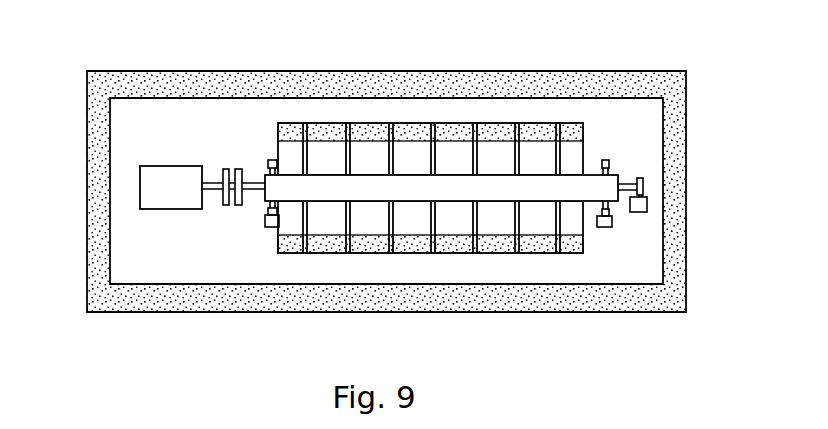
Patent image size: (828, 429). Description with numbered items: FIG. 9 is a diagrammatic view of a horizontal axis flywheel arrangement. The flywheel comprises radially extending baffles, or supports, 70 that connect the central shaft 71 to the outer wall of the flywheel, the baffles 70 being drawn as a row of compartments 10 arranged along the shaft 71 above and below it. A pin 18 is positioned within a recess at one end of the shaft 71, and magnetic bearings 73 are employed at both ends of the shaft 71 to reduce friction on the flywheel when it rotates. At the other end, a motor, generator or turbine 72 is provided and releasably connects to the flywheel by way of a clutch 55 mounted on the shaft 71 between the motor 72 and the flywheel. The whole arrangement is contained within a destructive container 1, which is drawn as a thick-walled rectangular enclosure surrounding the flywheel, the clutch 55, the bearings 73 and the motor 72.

The destructive container 1 is at (245, 87).
The cells 10 is at (411, 132).
The radially extending baffles 70 is at (475, 217).
The central shaft 71 is at (570, 190).
The motor, generator or turbine 72 is at (170, 185).
The clutch 55 is at (223, 200).
The magnetic bearings 73 is at (608, 164).
The pin 18 is at (630, 176).